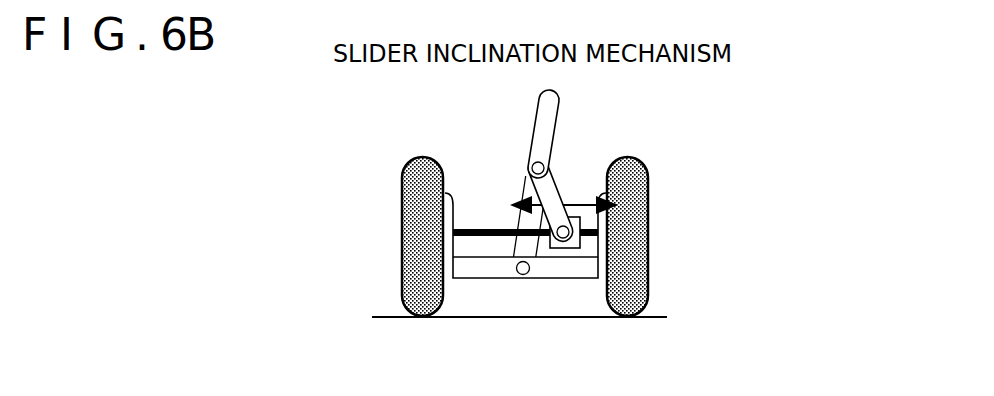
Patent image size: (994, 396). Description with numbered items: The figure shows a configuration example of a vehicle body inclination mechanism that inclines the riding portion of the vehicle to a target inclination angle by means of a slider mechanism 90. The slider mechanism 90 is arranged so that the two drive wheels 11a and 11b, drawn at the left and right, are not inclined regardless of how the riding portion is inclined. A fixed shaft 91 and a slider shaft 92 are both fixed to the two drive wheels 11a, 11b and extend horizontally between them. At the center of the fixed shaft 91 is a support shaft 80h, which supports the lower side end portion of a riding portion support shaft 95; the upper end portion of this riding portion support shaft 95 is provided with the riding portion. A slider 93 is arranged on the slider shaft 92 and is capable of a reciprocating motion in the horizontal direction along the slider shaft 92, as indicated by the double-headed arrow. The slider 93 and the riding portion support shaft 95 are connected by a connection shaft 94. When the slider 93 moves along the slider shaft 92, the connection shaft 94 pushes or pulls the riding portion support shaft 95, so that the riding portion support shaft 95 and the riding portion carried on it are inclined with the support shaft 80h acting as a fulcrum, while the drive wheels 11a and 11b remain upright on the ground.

The drive wheel 11a is at (402, 227).
The drive wheel 11b is at (648, 228).
The support shaft 80h is at (521, 276).
The slider mechanism 90 is at (565, 160).
The fixed shaft 91 is at (572, 280).
The slider shaft 92 is at (470, 229).
The slider 93 is at (577, 217).
The connection shaft 94 is at (530, 162).
The riding portion support shaft 95 is at (558, 117).